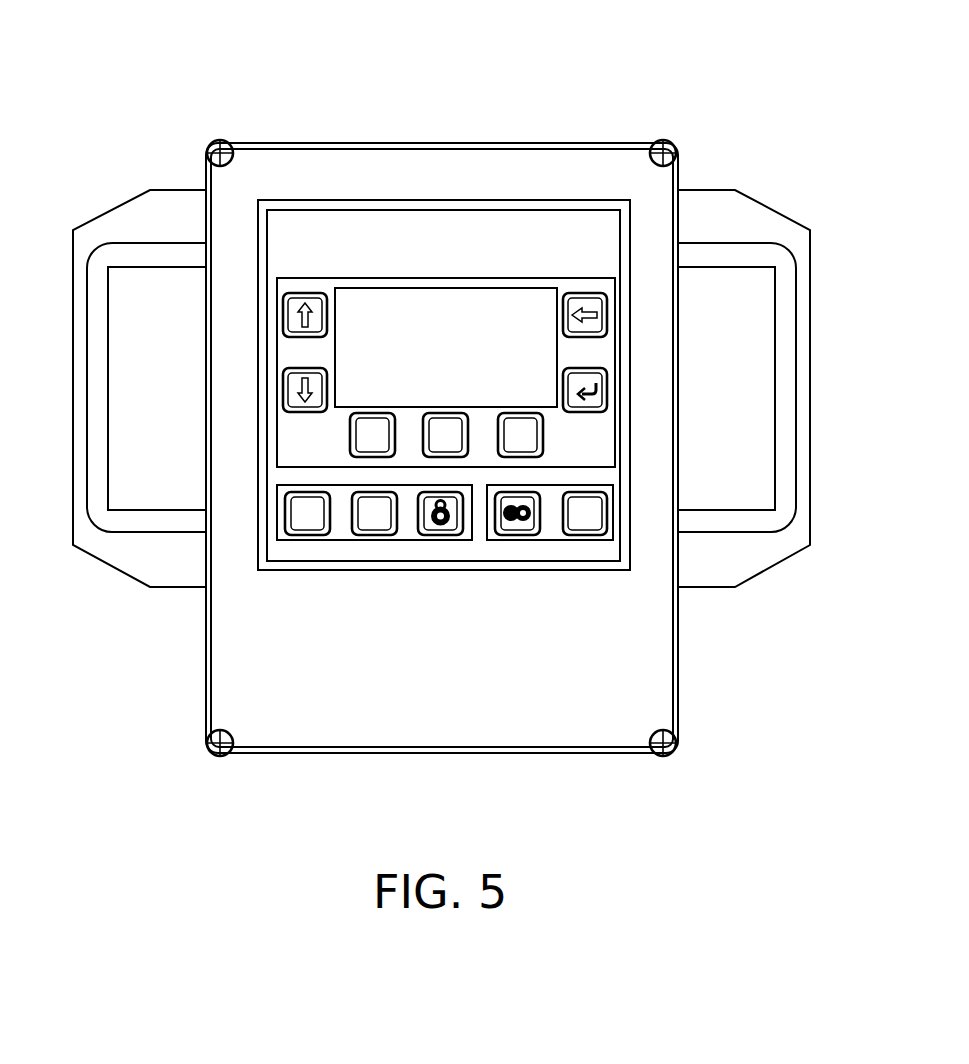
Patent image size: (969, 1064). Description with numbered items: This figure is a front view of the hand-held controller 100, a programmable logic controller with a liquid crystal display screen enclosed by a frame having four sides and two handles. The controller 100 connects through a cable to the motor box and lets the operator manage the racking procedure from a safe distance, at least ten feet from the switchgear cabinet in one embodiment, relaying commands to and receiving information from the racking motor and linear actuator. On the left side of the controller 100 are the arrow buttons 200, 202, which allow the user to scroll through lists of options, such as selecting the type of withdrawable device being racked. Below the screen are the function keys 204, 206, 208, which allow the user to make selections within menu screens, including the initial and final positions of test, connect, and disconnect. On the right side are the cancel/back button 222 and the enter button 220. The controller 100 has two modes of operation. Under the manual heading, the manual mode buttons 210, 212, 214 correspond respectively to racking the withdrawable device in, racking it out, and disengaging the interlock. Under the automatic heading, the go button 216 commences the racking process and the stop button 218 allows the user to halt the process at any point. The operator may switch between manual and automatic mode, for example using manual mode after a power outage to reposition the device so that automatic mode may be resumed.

The hand-held controller 100 is at (427, 155).
The arrow button 200 is at (291, 310).
The arrow button 202 is at (292, 386).
The function key 204 is at (352, 423).
The function key 206 is at (447, 418).
The function key 208 is at (543, 432).
The manual mode button 210 is at (295, 527).
The manual mode button 212 is at (372, 527).
The manual mode button 214 is at (450, 527).
The go button 216 is at (518, 527).
The stop button 218 is at (592, 527).
The enter button 220 is at (600, 378).
The cancel/back button 222 is at (600, 311).